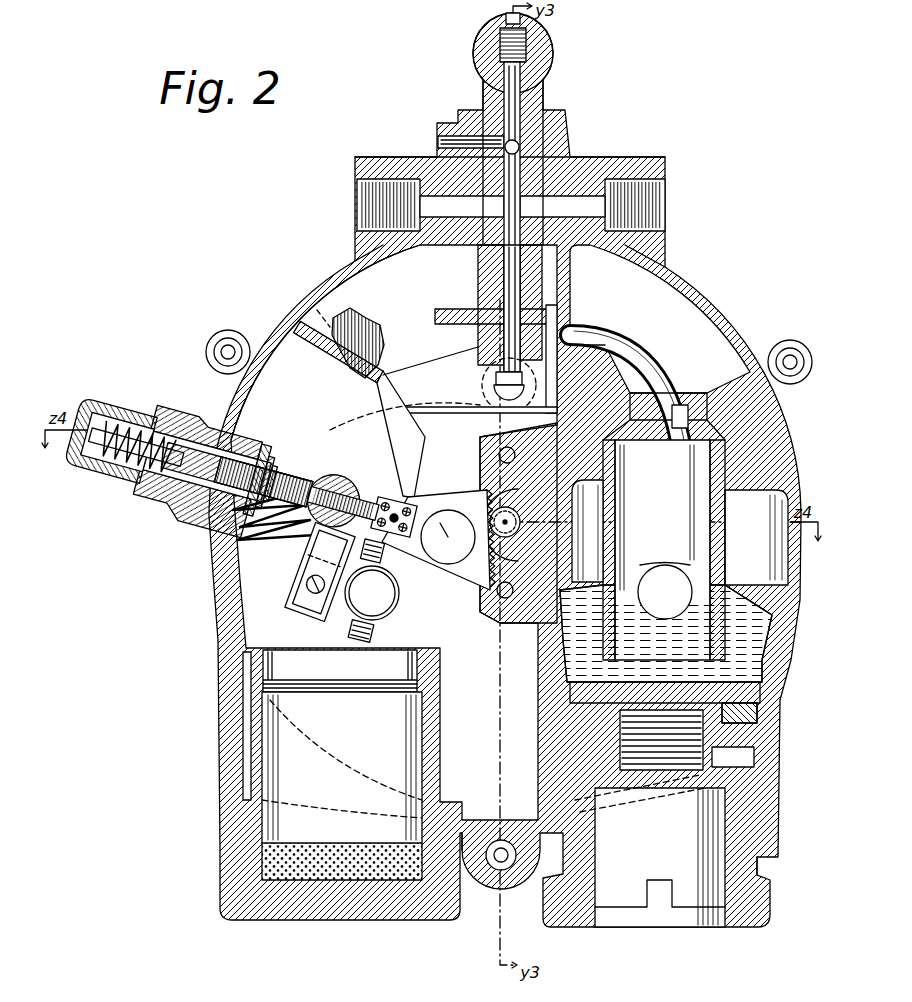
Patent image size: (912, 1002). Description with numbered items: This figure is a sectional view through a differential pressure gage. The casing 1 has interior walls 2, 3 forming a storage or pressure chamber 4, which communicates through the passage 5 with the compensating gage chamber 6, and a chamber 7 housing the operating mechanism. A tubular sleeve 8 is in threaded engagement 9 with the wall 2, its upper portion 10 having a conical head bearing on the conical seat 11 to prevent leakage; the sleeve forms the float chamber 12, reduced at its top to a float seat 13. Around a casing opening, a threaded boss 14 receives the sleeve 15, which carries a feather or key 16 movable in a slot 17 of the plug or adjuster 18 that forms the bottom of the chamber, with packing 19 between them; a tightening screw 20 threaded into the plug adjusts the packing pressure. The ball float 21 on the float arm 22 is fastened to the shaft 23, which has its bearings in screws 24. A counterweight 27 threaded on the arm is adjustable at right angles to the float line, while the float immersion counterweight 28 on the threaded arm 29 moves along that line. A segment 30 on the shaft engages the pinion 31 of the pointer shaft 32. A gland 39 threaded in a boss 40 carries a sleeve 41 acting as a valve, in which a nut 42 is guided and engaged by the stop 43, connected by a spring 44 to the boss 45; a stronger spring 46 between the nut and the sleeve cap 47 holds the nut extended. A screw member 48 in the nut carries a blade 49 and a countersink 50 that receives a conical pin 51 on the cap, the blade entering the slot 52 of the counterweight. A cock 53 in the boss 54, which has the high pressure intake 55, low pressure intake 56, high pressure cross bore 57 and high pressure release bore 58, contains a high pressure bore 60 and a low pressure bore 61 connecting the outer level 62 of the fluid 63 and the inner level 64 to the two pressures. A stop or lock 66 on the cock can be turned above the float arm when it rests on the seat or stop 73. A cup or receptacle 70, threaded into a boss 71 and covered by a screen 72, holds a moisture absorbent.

The casing 1 is at (313, 312).
The interior wall 2 is at (559, 263).
The interior wall 3 is at (340, 362).
The storage or pressure chamber 4 is at (358, 343).
The passage 5 is at (514, 612).
The compensating gage chamber 6 is at (756, 537).
The chamber 7 is at (490, 532).
The tubular sleeve 8 is at (724, 516).
The threaded engagement 9 is at (720, 462).
The upper portion of sleeve 10 is at (737, 395).
The conical seat 11 is at (664, 406).
The float chamber 12 is at (657, 517).
The float seat 13 is at (679, 408).
The interiorly threaded boss 14 is at (512, 858).
The sleeve 15 is at (565, 908).
The feather or key 16 is at (757, 758).
The slot 17 is at (698, 793).
The plug or adjuster 18 is at (712, 695).
The packing 19 is at (745, 712).
The tightening screw 20 is at (650, 818).
The float 21 is at (665, 592).
The float arm 22 is at (618, 357).
The shaft 23 is at (398, 515).
The screws 24 is at (394, 503).
The counterweight 27 is at (372, 604).
The float immersion counterweight 28 is at (330, 482).
The threaded arm 29 is at (386, 505).
The segment 30 is at (455, 570).
The pinion 31 is at (498, 536).
The pointer shaft 32 is at (500, 520).
The gland 39 is at (175, 393).
The boss 40 is at (215, 372).
The sleeve 41 is at (123, 425).
The nut 42 is at (178, 535).
The stop 43 is at (242, 446).
The spring 44 is at (268, 542).
The boss 45 is at (300, 574).
The spring 46 is at (130, 485).
The sleeve cap 47 is at (77, 465).
The screw member 48 is at (148, 518).
The blade 49 is at (250, 486).
The countersink 50 is at (137, 524).
The conical pin 51 is at (128, 408).
The slot 52 is at (300, 487).
The cock 53 is at (527, 115).
The boss 54 is at (550, 132).
The high pressure intake 55 is at (375, 207).
The low pressure intake 56 is at (650, 207).
The high pressure cross bore 57 is at (543, 130).
The high pressure release bore 58 is at (457, 143).
The high pressure bore 60 is at (507, 88).
The low pressure bore 61 is at (485, 270).
The outer level 62 is at (655, 567).
The fluid 63 is at (666, 633).
The inner level 64 is at (587, 531).
The stop or lock 66 is at (453, 310).
The cup or receptacle 70 is at (345, 768).
The boss 71 is at (468, 848).
The screen 72 is at (372, 684).
The seat or stop 73 is at (578, 358).